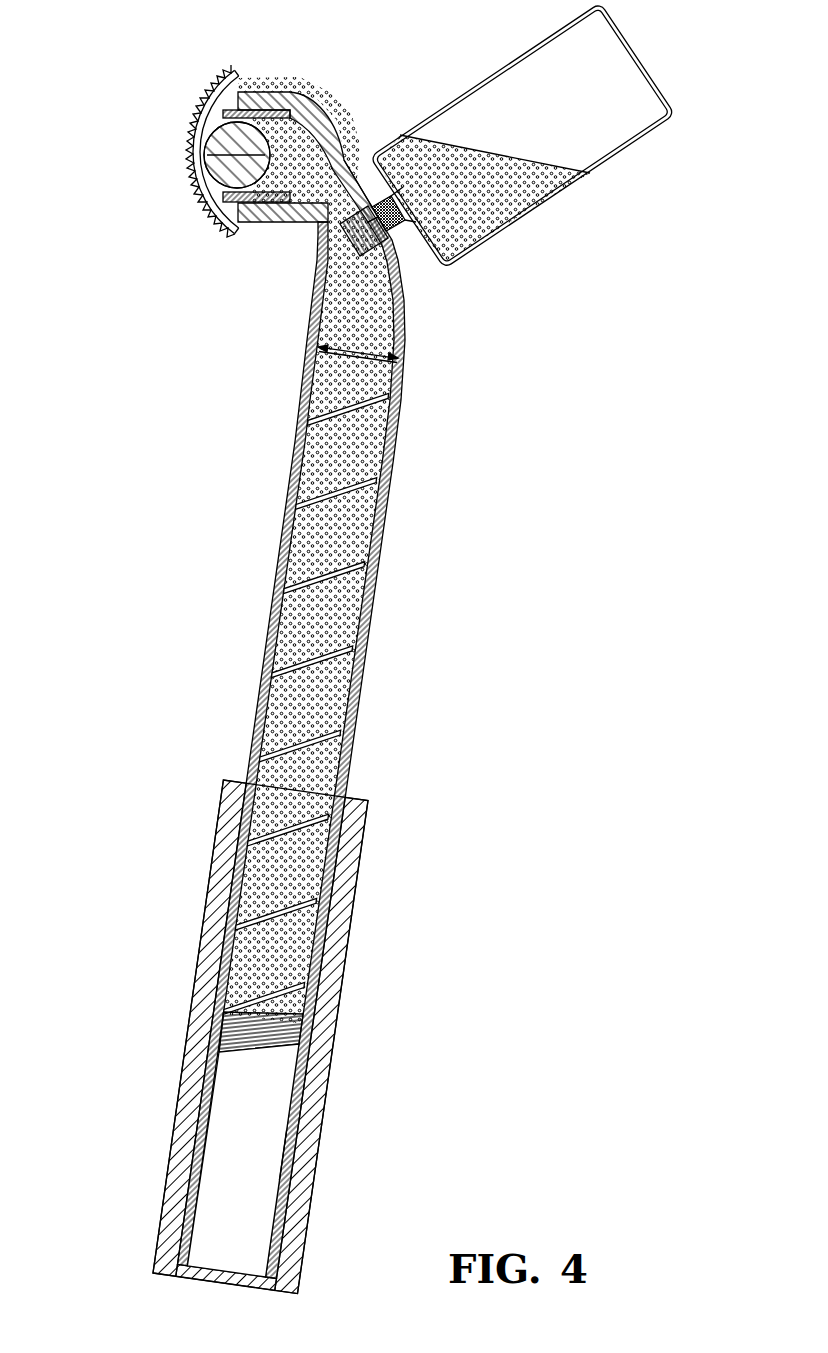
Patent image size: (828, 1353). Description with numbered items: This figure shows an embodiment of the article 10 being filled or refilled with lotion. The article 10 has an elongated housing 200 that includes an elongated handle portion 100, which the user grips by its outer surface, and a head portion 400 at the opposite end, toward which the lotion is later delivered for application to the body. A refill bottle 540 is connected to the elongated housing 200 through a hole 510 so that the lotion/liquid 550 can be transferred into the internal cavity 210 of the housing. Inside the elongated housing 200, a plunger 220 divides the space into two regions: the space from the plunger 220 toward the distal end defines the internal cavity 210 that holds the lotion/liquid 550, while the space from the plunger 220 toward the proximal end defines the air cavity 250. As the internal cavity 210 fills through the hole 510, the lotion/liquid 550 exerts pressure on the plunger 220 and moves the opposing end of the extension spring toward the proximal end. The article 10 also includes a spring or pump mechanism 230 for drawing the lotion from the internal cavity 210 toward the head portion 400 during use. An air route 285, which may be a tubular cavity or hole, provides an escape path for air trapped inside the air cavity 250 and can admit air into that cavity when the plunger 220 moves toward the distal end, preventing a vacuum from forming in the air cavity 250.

The article 10 is at (140, 406).
The elongated handle portion 100 is at (188, 979).
The elongated housing 200 is at (246, 698).
The internal cavity 210 is at (290, 630).
The plunger 220 is at (300, 1023).
The spring or pump mechanism 230 is at (222, 1022).
The air cavity 250 is at (216, 1143).
The air route 285 is at (283, 1157).
The head portion 400 is at (150, 86).
The hole 510 is at (363, 170).
The refill bottle 540 is at (564, 215).
The lotion/liquid 550 is at (443, 230).